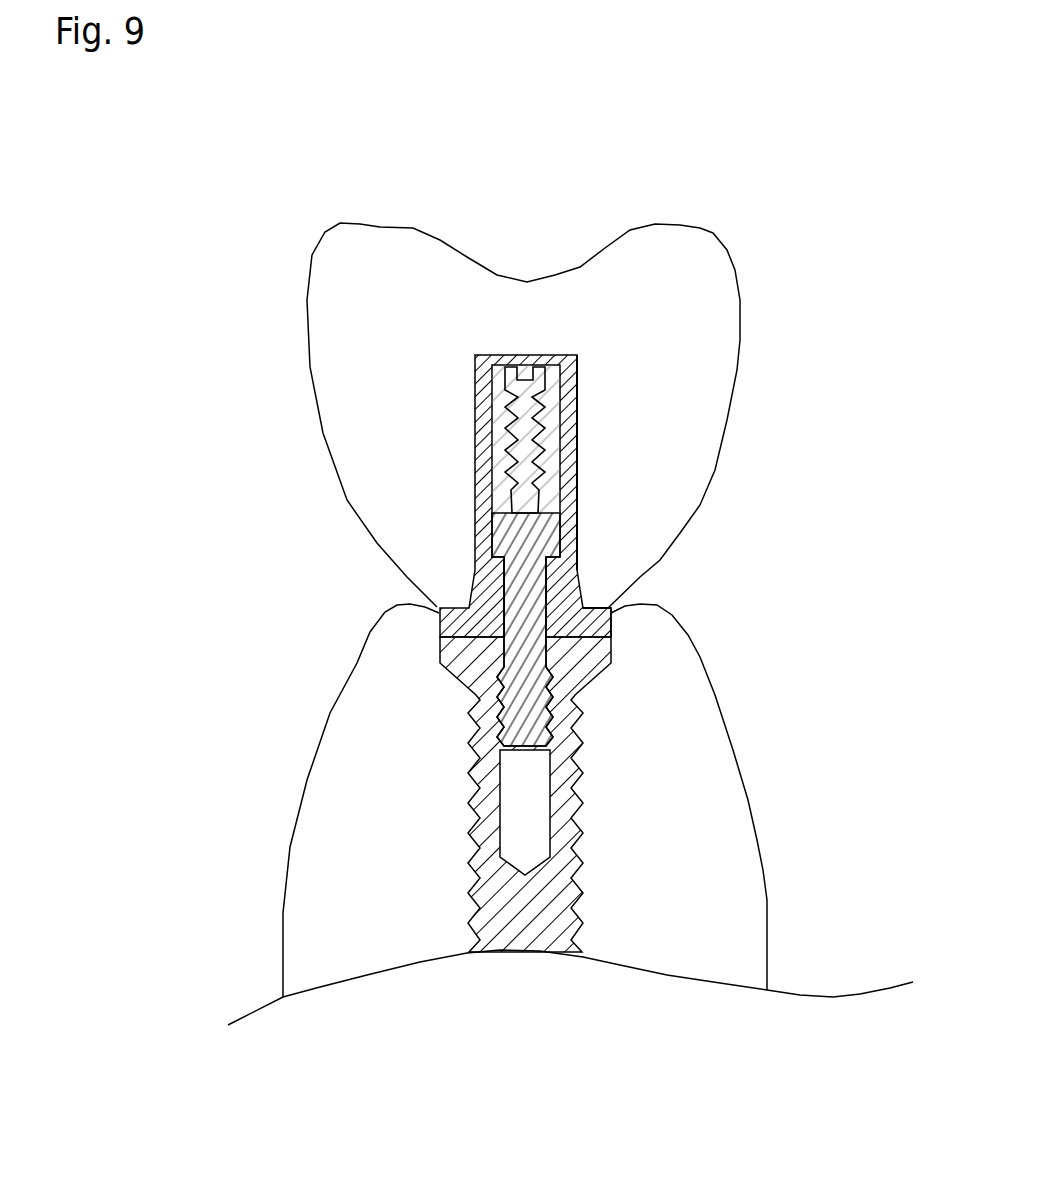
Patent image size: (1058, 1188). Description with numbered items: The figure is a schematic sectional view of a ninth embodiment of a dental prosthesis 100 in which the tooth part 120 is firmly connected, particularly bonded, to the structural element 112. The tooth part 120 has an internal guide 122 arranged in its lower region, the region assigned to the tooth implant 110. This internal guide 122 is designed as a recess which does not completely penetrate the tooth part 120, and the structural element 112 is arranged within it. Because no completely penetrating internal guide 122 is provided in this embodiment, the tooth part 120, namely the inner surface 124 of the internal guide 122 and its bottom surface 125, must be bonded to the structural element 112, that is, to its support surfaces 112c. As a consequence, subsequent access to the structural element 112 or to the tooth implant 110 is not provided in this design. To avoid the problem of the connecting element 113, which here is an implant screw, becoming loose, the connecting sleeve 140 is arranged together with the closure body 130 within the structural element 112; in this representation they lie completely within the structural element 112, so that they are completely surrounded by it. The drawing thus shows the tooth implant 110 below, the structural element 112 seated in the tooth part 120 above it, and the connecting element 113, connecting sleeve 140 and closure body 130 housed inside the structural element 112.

The dental prosthesis 100 is at (570, 539).
The tooth implant 110 is at (694, 794).
The structural element 112 is at (431, 497).
The support surfaces 112c is at (578, 495).
The connecting element 113 is at (342, 671).
The tooth part 120 is at (598, 415).
The internal guide 122 is at (755, 490).
The inner surface 124 is at (578, 495).
The bottom surface 125 is at (760, 665).
The closure body 130 is at (711, 474).
The connecting sleeve 140 is at (344, 384).